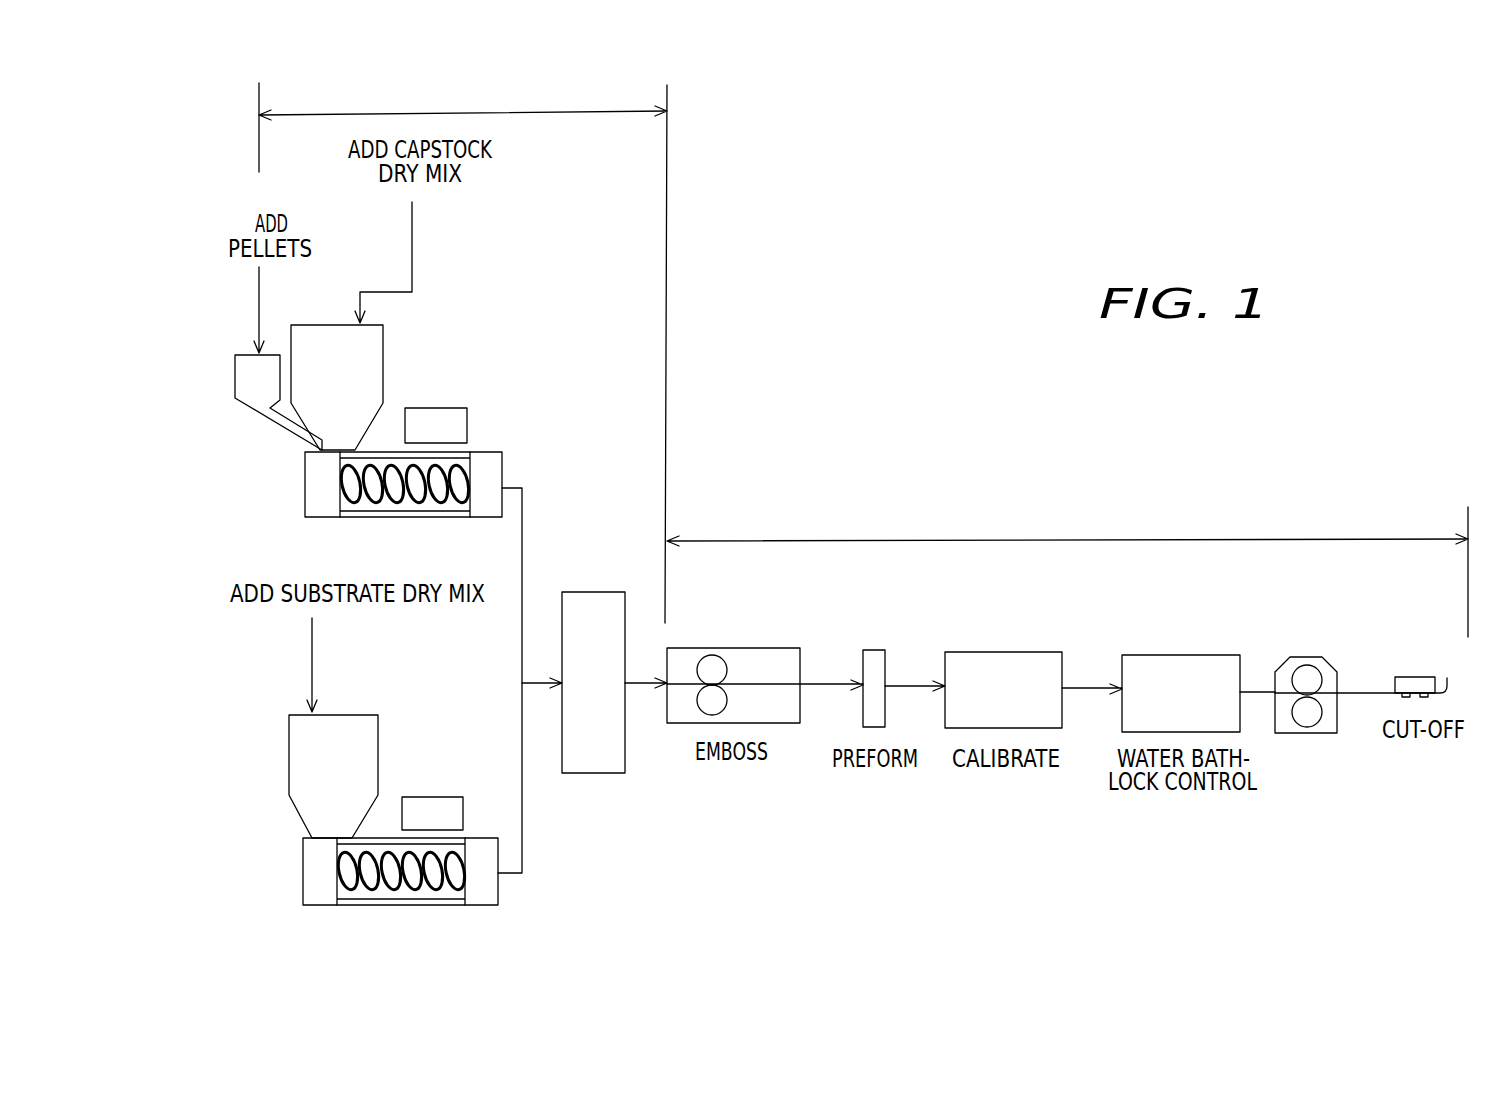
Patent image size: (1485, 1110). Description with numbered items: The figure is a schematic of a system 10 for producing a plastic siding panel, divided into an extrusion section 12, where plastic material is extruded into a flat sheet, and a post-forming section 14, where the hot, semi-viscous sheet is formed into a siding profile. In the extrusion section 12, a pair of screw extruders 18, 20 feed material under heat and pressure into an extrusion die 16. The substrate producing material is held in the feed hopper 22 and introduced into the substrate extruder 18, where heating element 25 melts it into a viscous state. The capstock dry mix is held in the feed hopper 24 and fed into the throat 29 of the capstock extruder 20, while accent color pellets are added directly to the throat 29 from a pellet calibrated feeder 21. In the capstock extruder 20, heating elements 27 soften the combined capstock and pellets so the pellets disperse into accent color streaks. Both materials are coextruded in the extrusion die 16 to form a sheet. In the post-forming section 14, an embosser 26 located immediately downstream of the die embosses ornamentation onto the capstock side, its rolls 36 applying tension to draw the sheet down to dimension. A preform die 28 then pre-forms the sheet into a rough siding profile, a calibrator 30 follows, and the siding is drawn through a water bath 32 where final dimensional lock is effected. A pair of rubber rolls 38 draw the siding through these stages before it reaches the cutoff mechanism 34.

The system 10 is at (789, 411).
The extrusion section 12 is at (463, 353).
The post-forming section 14 is at (1067, 571).
The extrusion die 16 is at (605, 592).
The substrate extruder 18 is at (303, 873).
The capstock extruder 20 is at (482, 452).
The pellet calibrated feeder 21 is at (235, 380).
The feed hopper 22 is at (378, 745).
The feed hopper 24 is at (383, 367).
The heating element 25 is at (420, 797).
The embosser 26 is at (785, 648).
The heating elements 27 is at (425, 408).
The preform die 28 is at (872, 650).
The throat 29 is at (323, 452).
The calibrator 30 is at (985, 652).
The water bath 32 is at (1205, 655).
The cutoff mechanism 34 is at (1422, 677).
The rolls 36 is at (714, 702).
The rubber rolls 38 is at (1302, 680).